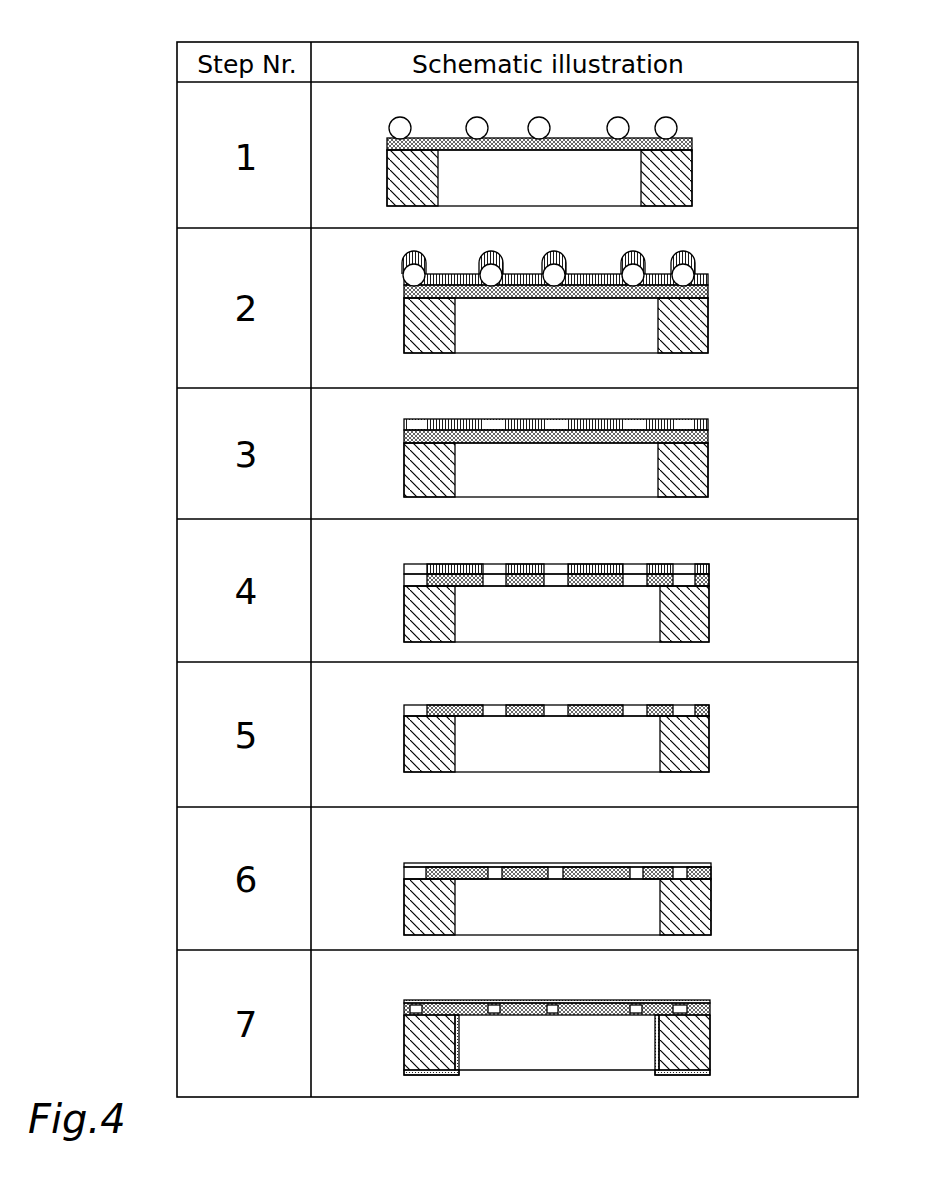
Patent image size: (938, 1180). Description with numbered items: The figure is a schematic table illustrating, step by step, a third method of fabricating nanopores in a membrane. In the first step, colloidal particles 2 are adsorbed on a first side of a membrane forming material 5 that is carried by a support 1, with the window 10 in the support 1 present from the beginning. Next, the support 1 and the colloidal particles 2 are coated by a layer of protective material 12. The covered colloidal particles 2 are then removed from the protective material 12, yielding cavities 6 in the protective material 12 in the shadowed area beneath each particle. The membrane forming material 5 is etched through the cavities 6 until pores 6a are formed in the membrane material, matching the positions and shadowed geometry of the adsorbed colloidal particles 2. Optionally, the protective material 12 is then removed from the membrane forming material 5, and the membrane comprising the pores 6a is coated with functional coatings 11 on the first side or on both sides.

The support 1 is at (680, 185).
The colloidal particles 2 is at (664, 125).
The membrane forming material 5 is at (692, 146).
The cavities 6 is at (413, 424).
The pores 6a is at (500, 566).
The window 10 is at (545, 610).
The functional coatings 11 is at (628, 864).
The protective material 12 is at (694, 266).